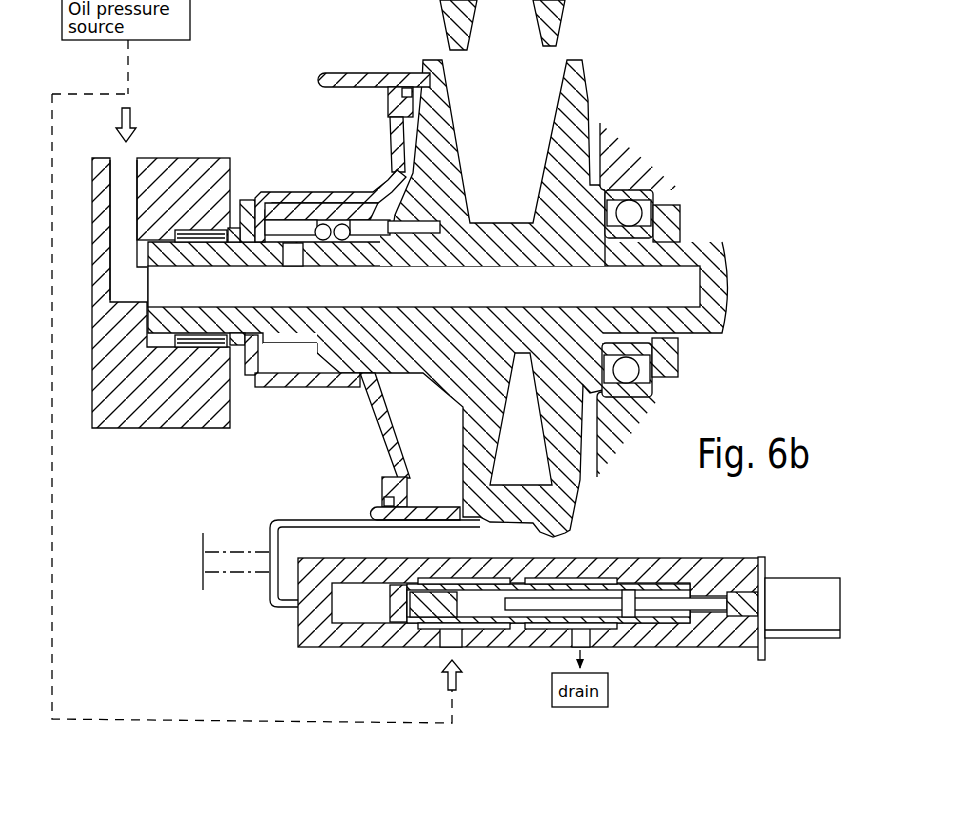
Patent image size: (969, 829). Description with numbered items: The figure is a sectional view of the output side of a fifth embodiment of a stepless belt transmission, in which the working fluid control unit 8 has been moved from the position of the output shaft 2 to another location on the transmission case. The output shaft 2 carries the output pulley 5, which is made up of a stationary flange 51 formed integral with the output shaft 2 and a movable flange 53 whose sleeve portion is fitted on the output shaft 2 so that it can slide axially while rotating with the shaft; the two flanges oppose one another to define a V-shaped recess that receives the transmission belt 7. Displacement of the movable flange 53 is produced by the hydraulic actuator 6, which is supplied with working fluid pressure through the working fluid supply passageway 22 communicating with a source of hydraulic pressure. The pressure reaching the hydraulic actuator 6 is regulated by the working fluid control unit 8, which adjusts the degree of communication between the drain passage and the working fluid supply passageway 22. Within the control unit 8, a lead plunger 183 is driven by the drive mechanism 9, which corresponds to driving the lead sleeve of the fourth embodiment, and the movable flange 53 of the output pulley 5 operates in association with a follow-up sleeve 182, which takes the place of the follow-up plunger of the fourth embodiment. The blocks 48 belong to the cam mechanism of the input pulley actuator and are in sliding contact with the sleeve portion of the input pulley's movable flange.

The output shaft 2 is at (722, 246).
The output pulley 5 is at (601, 99).
The hydraulic actuator 6 is at (362, 423).
The transmission belt 7 is at (567, 538).
The working fluid control unit 8 is at (710, 559).
The drive mechanism 9 is at (812, 580).
The working fluid supply passageway 22 is at (124, 170).
The blocks 48 is at (662, 0).
The stationary flange 51 is at (592, 120).
The movable flange 53 is at (420, 72).
The follow-up sleeve 182 is at (575, 578).
The lead plunger 183 is at (490, 620).